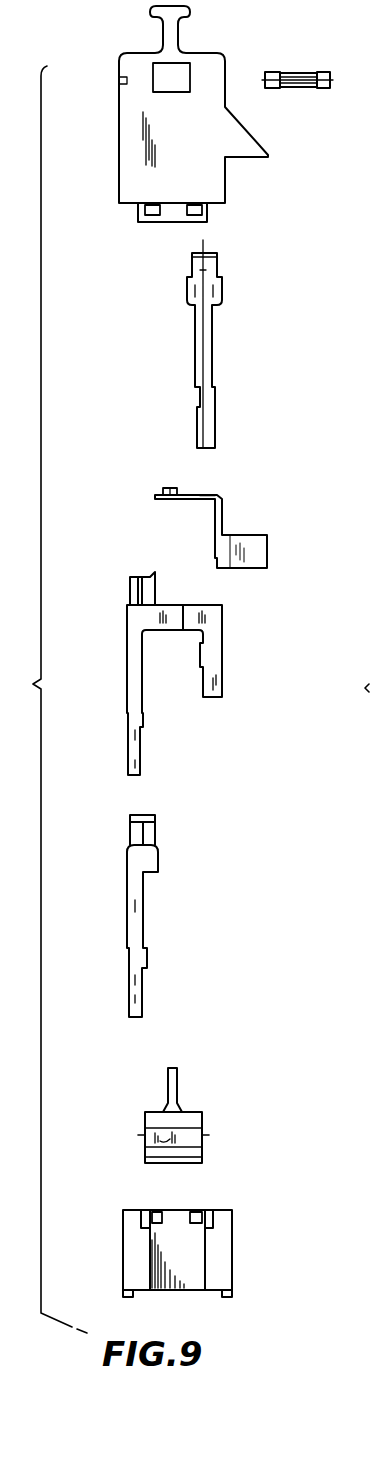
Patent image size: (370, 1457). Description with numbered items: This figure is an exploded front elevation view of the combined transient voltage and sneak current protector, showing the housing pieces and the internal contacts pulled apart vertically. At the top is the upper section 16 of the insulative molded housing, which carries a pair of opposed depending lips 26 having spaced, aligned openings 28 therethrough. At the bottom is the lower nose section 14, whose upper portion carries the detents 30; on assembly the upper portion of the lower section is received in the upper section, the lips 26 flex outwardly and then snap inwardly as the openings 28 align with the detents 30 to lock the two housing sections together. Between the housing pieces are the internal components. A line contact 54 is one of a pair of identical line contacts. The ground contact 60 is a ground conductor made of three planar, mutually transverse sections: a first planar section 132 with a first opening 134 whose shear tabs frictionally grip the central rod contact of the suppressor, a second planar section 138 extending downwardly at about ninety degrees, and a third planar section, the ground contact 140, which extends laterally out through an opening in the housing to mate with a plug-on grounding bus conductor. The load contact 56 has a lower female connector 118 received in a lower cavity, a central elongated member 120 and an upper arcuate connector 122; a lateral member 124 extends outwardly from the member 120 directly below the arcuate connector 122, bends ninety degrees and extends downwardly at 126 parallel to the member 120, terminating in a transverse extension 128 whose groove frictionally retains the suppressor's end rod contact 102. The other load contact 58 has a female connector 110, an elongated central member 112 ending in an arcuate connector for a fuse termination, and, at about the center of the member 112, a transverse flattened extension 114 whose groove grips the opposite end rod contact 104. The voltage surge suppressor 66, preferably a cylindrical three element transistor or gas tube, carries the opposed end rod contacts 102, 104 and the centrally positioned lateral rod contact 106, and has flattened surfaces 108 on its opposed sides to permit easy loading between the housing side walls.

The lower nose section 14 is at (238, 1240).
The upper section 16 is at (103, 103).
The depending lips 26 is at (172, 216).
The openings 28 is at (138, 207).
The detents 30 is at (147, 1220).
The line contact 54 is at (212, 345).
The load contact 56 is at (120, 670).
The load contact 58 is at (162, 892).
The ground contact 60 is at (230, 518).
The voltage surge suppressor 66 is at (198, 1117).
The end rod contact 102 is at (142, 1138).
The end rod contact 104 is at (203, 1138).
The lateral rod contact 106 is at (178, 1082).
The flattened surfaces 108 is at (170, 1143).
The female connector 110 is at (140, 992).
The elongated central member 112 is at (142, 922).
The transverse flattened extension 114 is at (132, 837).
The lower female connector 118 is at (142, 752).
The central elongated member 120 is at (142, 692).
The upper arcuate connector 122 is at (130, 591).
The lateral member 124 is at (177, 604).
The downward extension of lateral member 126 is at (215, 652).
The extension 128 is at (201, 667).
The first planar section 132 is at (200, 496).
The first opening 134 is at (165, 502).
The second planar section 138 is at (213, 522).
The ground contact 140 is at (263, 548).